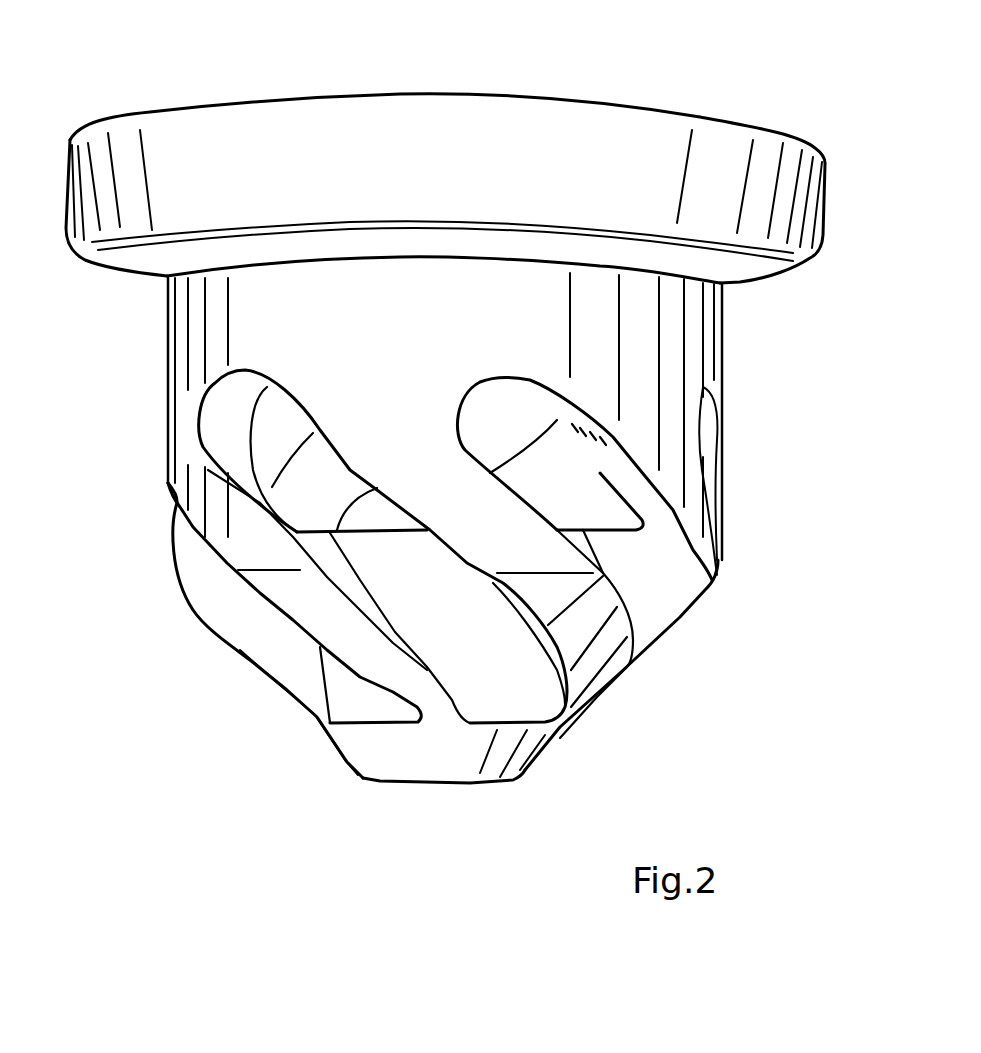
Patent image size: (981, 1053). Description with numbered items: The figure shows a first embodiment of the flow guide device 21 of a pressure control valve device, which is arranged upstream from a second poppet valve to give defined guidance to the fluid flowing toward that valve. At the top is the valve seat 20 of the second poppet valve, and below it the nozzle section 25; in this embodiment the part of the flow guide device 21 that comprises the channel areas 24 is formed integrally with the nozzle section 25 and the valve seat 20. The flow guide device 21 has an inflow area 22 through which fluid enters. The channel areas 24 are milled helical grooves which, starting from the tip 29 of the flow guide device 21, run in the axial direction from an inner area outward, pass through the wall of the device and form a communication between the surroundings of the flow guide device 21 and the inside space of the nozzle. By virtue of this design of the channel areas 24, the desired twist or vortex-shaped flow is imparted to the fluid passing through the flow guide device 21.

The valve seat 20 is at (437, 92).
The flow guide device 21 is at (140, 567).
The inflow area 22 is at (300, 672).
The channel areas 24 is at (266, 452).
The nozzle section 25 is at (158, 356).
The tip 29 is at (428, 772).